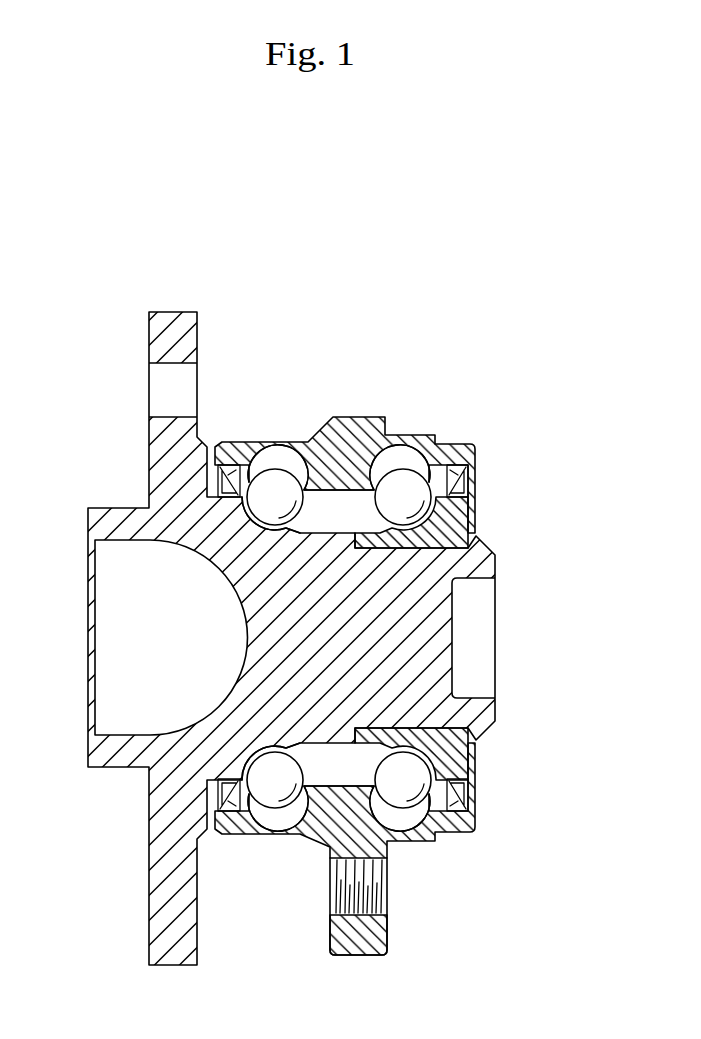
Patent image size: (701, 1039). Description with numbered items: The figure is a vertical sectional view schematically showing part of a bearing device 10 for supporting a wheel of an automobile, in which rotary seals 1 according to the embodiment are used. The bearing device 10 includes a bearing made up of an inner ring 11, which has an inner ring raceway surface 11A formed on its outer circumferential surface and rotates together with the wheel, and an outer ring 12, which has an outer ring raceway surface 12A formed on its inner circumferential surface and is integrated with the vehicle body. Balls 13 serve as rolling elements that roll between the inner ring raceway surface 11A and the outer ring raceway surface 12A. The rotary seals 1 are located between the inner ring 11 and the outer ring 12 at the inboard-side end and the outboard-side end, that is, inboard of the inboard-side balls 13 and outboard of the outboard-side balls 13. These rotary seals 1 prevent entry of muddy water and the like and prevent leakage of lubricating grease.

The bearing device 10 is at (326, 382).
The inner ring 11 is at (427, 643).
The inner ring raceway surface 11A is at (432, 500).
The outer ring 12 is at (360, 425).
The outer ring raceway surface 12A is at (262, 468).
The rotary seal 1 is at (231, 456).
The balls 13 is at (390, 792).